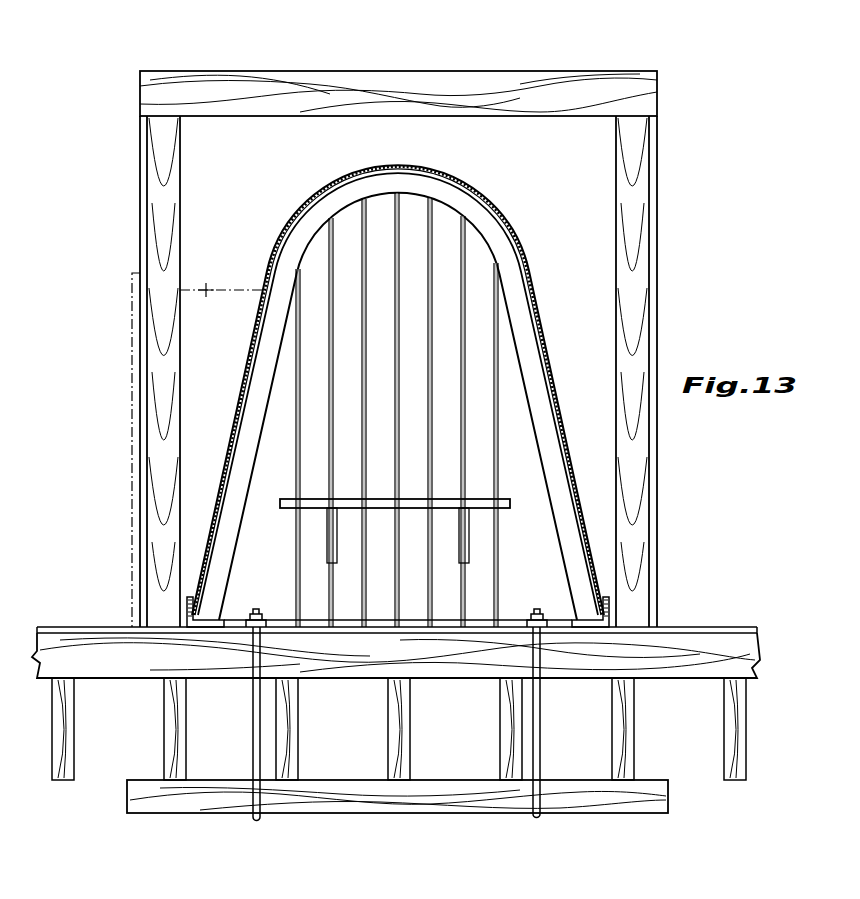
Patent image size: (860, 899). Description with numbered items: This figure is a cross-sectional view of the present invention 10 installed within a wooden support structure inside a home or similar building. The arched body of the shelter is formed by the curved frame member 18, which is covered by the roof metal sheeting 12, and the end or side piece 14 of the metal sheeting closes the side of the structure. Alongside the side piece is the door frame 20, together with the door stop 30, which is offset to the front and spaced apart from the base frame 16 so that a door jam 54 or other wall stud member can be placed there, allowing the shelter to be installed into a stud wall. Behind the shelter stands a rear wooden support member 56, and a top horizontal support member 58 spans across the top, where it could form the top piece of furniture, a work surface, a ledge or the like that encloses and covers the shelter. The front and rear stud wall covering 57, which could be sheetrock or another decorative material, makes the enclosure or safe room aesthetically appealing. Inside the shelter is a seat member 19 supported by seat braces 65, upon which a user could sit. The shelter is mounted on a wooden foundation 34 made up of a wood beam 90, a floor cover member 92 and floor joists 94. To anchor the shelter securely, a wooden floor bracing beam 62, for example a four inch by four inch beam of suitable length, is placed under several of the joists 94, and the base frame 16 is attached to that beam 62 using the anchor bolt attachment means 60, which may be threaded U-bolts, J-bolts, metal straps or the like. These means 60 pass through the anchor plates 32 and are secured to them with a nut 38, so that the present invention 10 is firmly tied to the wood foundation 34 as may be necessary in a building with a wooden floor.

The present invention 10 is at (523, 211).
The roof metal sheeting 12 is at (303, 205).
The end or side piece of the metal sheeting 14 is at (483, 332).
The base frame 16 is at (188, 612).
The curved frame member 18 is at (402, 177).
The seat member 19 is at (378, 497).
The door frame 20 is at (206, 290).
The door stop 30 is at (132, 300).
The anchor plates 32 is at (264, 617).
The foundation 34 is at (433, 615).
The nut 38 is at (537, 612).
The door jam 54 is at (165, 178).
The rear wooden support member 56 is at (635, 190).
The front and rear stud wall covering 57 is at (147, 140).
The top horizontal support member 58 is at (398, 76).
The anchor bolt attachment means 60 is at (540, 700).
The base brace or support beam 62 is at (650, 812).
The seat braces 65 is at (340, 560).
The wood beam 90 is at (757, 660).
The floor cover member 92 is at (735, 627).
The floor joists 94 is at (633, 728).